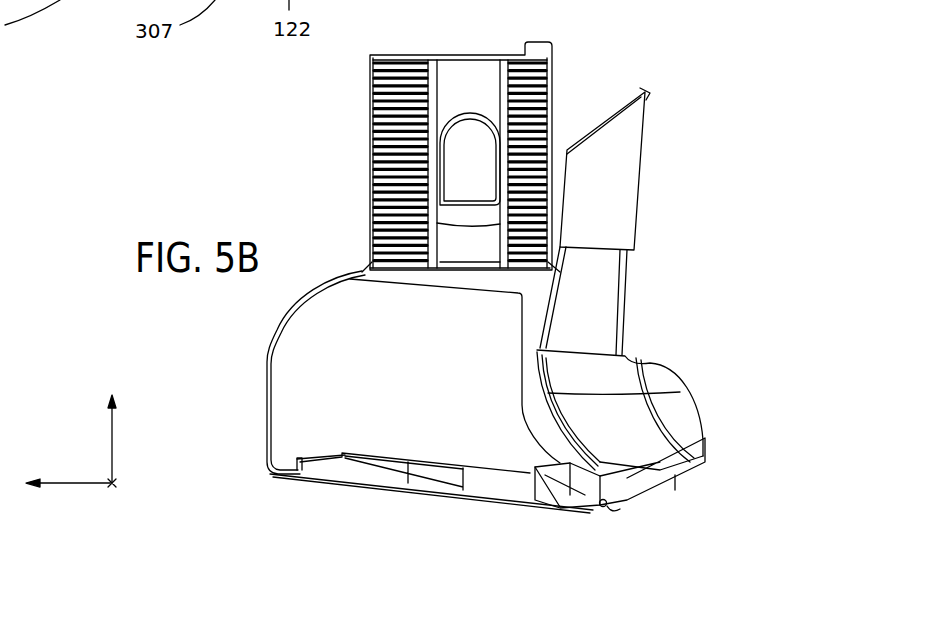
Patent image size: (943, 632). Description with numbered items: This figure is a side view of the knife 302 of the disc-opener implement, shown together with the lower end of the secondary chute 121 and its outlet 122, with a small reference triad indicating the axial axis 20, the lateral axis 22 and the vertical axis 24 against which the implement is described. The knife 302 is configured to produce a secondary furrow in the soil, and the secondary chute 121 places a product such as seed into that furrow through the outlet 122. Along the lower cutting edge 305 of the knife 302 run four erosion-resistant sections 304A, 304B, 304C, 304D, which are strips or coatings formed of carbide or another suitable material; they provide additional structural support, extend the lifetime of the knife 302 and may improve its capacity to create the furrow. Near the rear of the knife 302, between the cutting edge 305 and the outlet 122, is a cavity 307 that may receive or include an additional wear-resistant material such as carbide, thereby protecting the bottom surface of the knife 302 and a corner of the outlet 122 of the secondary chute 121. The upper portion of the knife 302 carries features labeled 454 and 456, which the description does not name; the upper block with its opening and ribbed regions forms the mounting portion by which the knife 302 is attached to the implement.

The axial axis 20 is at (73, 482).
The lateral axis 22 is at (115, 490).
The vertical axis 24 is at (117, 443).
The secondary chute 121 is at (617, 195).
The outlet 122 is at (627, 440).
The knife 302 is at (301, 398).
The erosion-resistant section 304A is at (322, 468).
The erosion-resistant section 304B is at (365, 472).
The erosion-resistant section 304C is at (447, 480).
The erosion-resistant section 304D is at (507, 488).
The cutting edge 305 is at (322, 515).
The cavity 307 is at (608, 510).
The window opening 454 is at (476, 137).
The ribs 456 is at (400, 215).